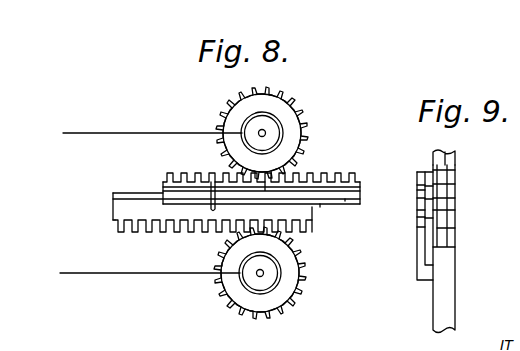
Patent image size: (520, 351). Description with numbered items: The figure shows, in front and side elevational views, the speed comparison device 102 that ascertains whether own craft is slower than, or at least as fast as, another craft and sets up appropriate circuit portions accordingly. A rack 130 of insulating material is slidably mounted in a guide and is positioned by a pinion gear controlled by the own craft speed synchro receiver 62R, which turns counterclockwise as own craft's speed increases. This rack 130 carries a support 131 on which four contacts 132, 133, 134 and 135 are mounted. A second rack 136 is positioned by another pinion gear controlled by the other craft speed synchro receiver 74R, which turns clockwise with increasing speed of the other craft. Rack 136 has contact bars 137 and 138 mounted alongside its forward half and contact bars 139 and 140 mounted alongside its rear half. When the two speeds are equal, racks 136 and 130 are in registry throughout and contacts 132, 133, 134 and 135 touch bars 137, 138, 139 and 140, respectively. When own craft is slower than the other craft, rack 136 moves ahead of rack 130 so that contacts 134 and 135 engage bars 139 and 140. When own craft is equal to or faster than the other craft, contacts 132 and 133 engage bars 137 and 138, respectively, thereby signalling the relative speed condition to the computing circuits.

In FIG. 8, the gear assembly 102 is at (206, 113).
In FIG. 8, the other craft speed synchro receiver 74R is at (279, 118).
In FIG. 8, the own craft speed synchro receiver 62R is at (278, 292).
In FIG. 8, the rack 130 is at (113, 216).
In FIG. 9, the rack 130 is at (450, 300).
In FIG. 8, the support 131 is at (212, 209).
In FIG. 9, the support 131 is at (419, 280).
In FIG. 9, the contact 132 is at (426, 170).
In FIG. 9, the contact 133 is at (427, 188).
In FIG. 9, the contact 134 is at (427, 203).
In FIG. 9, the contact 135 is at (427, 224).
In FIG. 8, the rack 136 is at (318, 176).
In FIG. 9, the rack 136 is at (447, 165).
In FIG. 8, the contact bar 137 is at (173, 184).
In FIG. 9, the contact bar 137 is at (440, 170).
In FIG. 8, the contact bar 138 is at (163, 188).
In FIG. 9, the contact bar 138 is at (440, 184).
In FIG. 8, the contact bar 139 is at (345, 201).
In FIG. 9, the contact bar 139 is at (440, 205).
In FIG. 8, the contact bar 140 is at (320, 207).
In FIG. 9, the contact bar 140 is at (455, 228).